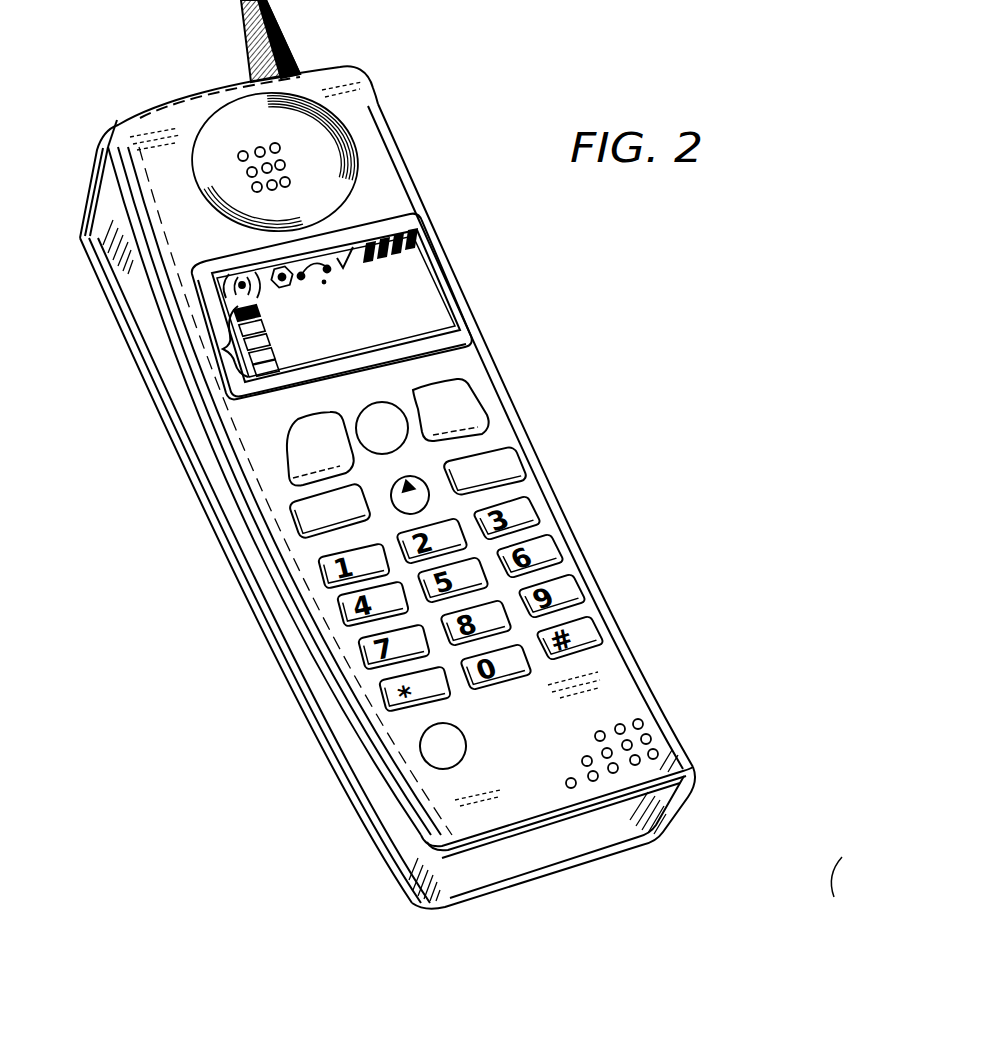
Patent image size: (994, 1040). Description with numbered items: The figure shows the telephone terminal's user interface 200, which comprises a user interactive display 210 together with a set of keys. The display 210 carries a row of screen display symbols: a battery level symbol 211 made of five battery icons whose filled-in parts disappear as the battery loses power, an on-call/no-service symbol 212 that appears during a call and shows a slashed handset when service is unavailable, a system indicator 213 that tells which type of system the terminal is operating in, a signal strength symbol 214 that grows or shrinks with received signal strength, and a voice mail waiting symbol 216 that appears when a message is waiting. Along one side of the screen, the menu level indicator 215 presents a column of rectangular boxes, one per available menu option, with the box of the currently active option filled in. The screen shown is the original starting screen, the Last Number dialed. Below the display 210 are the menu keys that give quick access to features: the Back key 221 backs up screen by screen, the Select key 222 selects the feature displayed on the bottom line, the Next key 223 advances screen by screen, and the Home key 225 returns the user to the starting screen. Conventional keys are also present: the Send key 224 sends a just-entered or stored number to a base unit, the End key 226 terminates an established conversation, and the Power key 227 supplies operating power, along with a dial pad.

The user interface 200 is at (456, 184).
The user interactive display 210 is at (393, 285).
The battery level symbol 211 is at (404, 230).
The on-call/no-service symbol 212 is at (282, 267).
The system indicator 213 is at (304, 268).
The signal strength symbol 214 is at (228, 284).
The menu level indicator 215 is at (224, 349).
The voice mail waiting symbol 216 is at (342, 259).
The Back key 221 is at (296, 466).
The Select key 222 is at (392, 453).
The Next key 223 is at (460, 384).
The Send key 224 is at (294, 522).
The Home key 225 is at (396, 508).
The End key 226 is at (509, 452).
The Power key 227 is at (421, 748).